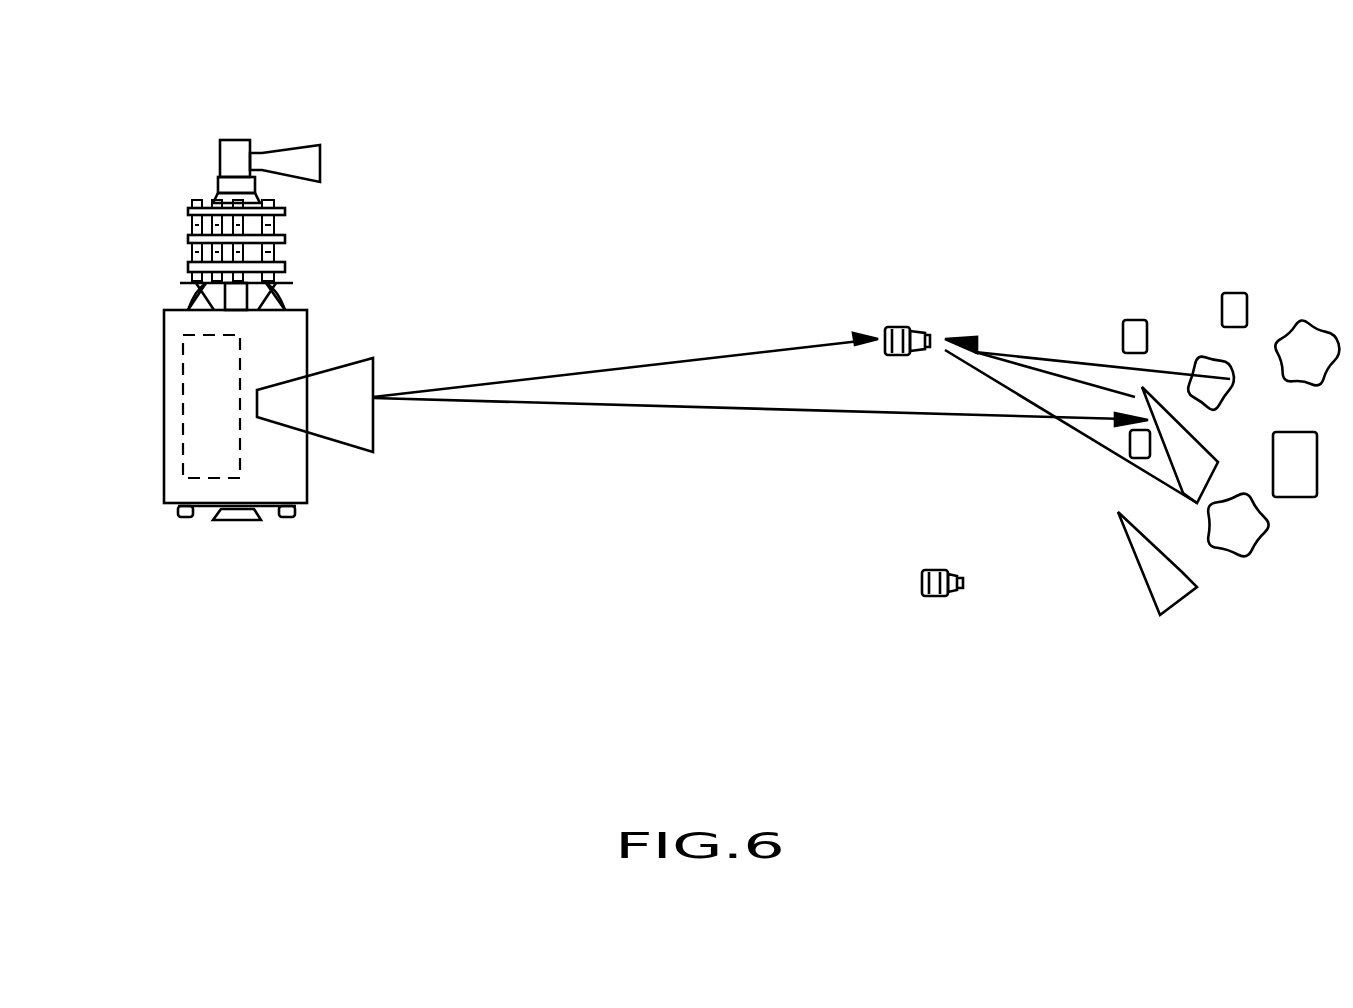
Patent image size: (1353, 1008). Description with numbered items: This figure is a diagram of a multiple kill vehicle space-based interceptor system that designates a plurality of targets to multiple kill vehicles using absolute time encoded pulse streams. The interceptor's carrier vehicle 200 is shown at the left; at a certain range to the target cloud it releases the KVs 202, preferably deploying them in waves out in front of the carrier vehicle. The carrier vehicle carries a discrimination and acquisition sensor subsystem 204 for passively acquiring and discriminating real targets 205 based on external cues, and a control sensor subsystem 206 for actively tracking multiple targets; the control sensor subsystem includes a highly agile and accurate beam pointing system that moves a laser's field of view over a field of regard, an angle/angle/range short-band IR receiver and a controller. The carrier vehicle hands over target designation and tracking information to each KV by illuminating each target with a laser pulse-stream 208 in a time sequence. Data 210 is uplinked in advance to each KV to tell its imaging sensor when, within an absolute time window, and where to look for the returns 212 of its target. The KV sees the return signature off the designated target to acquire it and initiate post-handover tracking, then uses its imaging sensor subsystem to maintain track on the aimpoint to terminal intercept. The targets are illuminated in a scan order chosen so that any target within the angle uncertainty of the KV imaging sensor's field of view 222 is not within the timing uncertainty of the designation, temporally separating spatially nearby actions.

The carrier vehicle 200 is at (133, 298).
The kill vehicles 202 is at (893, 284).
The discrimination and acquisition sensor subsystem 204 is at (242, 143).
The real targets 205 is at (1145, 470).
The control sensor subsystem 206 is at (188, 430).
The laser pulse-stream 208 is at (905, 415).
The data 210 is at (628, 366).
The returns 212 is at (1042, 358).
The imaging sensor field of view 222 is at (1167, 372).